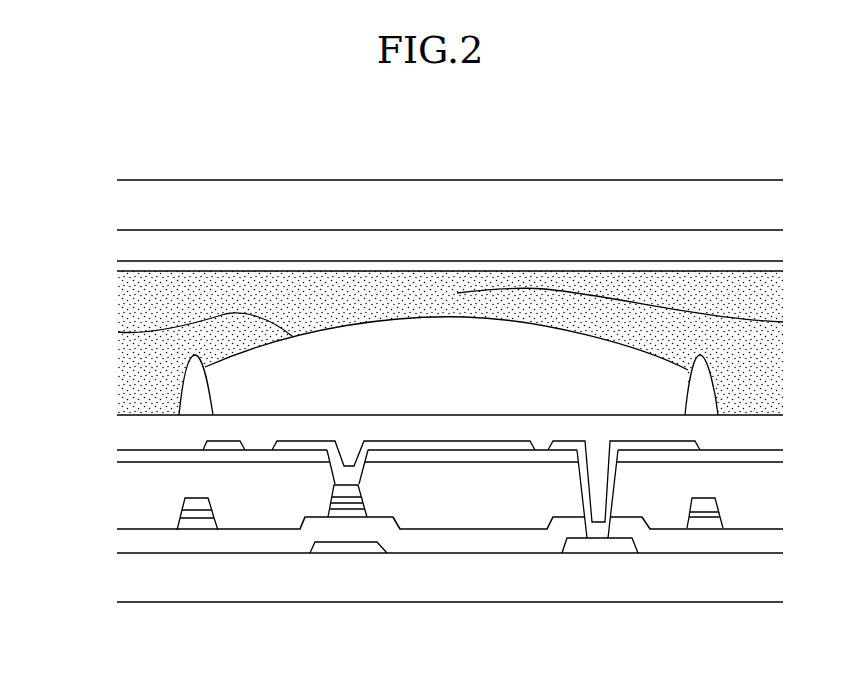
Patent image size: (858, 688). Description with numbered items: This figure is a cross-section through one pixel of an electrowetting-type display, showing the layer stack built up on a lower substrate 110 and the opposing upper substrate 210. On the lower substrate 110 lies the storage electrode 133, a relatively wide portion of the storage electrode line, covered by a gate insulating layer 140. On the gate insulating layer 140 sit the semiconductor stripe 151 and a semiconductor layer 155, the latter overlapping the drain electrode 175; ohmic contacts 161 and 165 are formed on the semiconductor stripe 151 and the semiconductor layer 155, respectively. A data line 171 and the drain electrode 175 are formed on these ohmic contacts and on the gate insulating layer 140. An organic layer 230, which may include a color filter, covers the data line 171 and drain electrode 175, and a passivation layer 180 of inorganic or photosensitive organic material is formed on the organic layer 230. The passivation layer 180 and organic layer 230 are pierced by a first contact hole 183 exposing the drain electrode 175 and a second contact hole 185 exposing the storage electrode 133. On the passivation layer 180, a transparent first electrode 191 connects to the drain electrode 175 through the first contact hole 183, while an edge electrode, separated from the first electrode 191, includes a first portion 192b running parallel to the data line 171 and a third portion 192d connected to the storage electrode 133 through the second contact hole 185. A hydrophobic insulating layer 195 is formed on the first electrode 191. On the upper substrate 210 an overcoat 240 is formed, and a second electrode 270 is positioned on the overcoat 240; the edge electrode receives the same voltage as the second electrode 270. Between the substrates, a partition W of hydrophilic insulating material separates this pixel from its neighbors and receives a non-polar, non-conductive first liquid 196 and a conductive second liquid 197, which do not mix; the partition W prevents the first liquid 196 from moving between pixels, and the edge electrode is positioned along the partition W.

The lower substrate 110 is at (763, 581).
The storage electrode 133 is at (349, 548).
The gate insulating layer 140 is at (763, 545).
The semiconductor stripe 151 is at (198, 523).
The semiconductor layer 155 is at (342, 511).
The ohmic contact 161 is at (190, 515).
The ohmic contact 165 is at (364, 503).
The data line 171 is at (193, 503).
The drain electrode 175 is at (332, 495).
The passivation layer 180 is at (765, 455).
The first contact hole 183 is at (350, 433).
The second contact hole 185 is at (600, 468).
The first electrode 191 is at (437, 437).
The first portion of edge electrode 192b is at (218, 446).
The third portion of edge electrode 192d is at (650, 438).
The hydrophobic insulating layer 195 is at (763, 432).
The first liquid 196 is at (118, 330).
The second liquid 197 is at (783, 322).
The upper substrate 210 is at (757, 202).
The organic layer 230 is at (477, 497).
The overcoat 240 is at (760, 245).
The second electrode 270 is at (760, 265).
The partition W is at (703, 382).